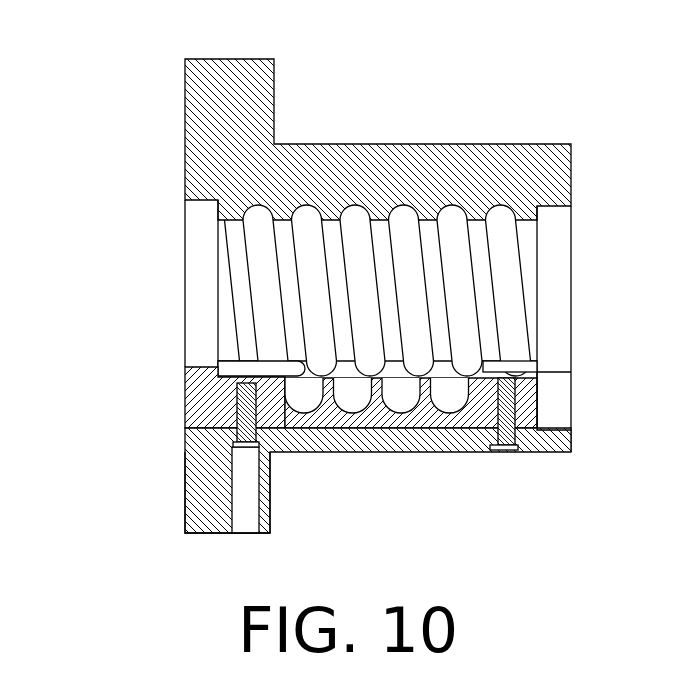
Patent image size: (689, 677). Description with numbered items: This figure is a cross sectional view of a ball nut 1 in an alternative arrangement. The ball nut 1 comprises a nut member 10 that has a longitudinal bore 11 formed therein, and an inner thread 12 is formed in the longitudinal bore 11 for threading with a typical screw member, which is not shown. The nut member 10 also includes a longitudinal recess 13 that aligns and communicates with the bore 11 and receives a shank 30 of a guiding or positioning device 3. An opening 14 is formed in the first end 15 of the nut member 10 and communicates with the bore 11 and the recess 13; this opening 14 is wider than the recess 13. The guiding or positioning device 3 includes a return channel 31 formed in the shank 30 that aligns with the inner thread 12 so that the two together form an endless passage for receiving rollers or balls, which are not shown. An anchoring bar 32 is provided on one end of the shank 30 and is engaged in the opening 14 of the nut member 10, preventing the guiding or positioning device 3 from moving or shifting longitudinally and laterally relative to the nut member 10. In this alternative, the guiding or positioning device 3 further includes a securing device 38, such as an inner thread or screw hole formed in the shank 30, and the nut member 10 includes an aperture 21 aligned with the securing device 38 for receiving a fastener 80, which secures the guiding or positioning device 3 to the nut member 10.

The ball nut 1 is at (500, 92).
The nut member 10 is at (347, 143).
The longitudinal bore 11 is at (208, 279).
The inner thread 12 is at (403, 215).
The anchoring bar 32 is at (185, 377).
The securing device 38 is at (237, 402).
The opening 14 is at (186, 419).
The first end 15 is at (182, 512).
The longitudinal recess 13 is at (327, 422).
The return channel 31 is at (352, 397).
The shank 30 is at (411, 461).
The aperture 21 is at (478, 447).
The fastener 80 is at (533, 440).
The guiding or positioning device 3 is at (538, 387).